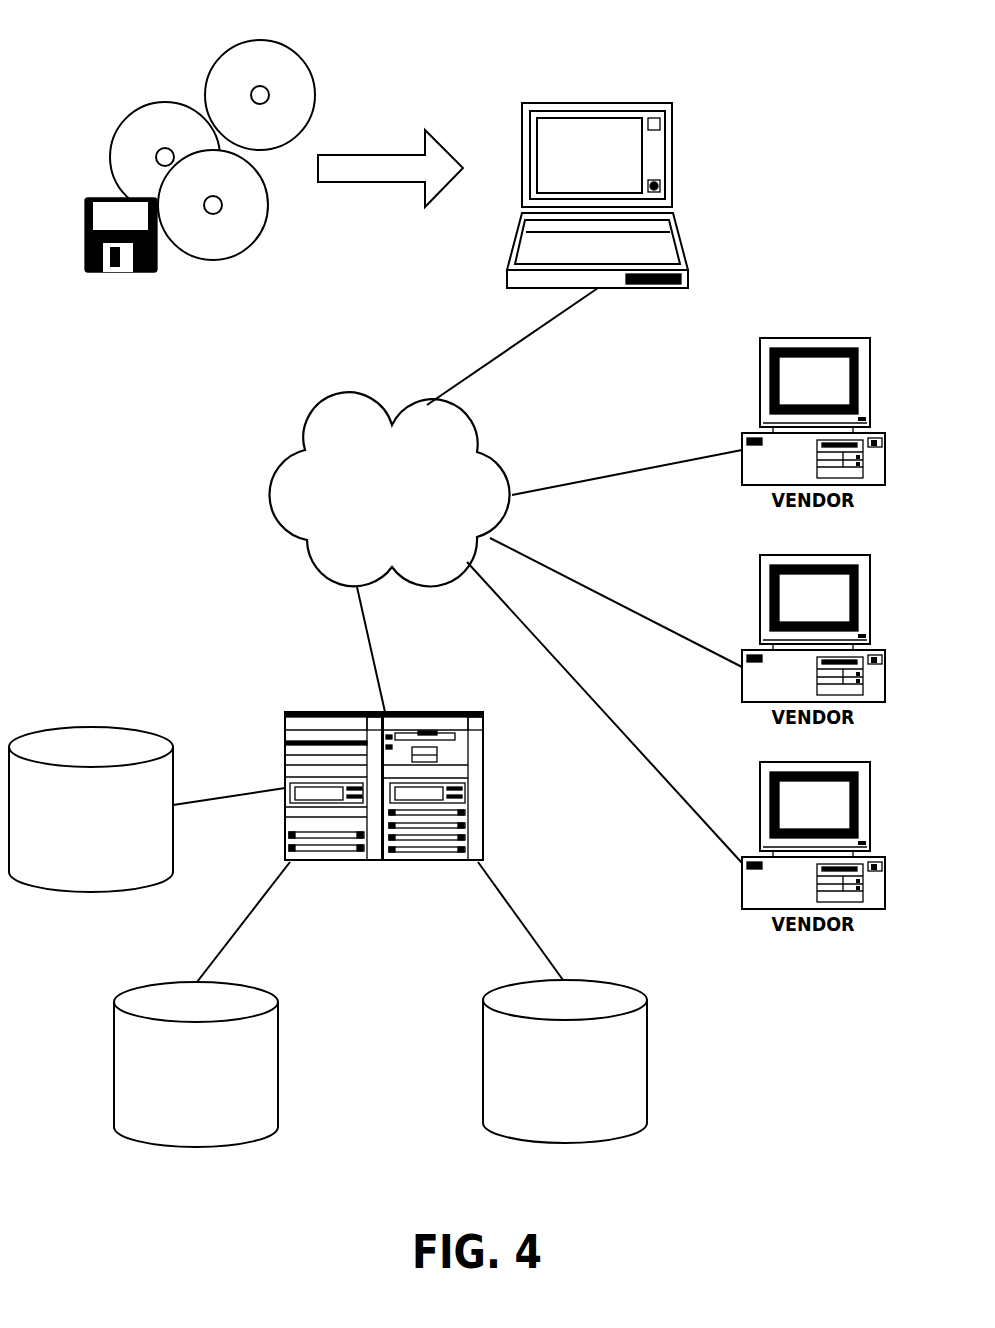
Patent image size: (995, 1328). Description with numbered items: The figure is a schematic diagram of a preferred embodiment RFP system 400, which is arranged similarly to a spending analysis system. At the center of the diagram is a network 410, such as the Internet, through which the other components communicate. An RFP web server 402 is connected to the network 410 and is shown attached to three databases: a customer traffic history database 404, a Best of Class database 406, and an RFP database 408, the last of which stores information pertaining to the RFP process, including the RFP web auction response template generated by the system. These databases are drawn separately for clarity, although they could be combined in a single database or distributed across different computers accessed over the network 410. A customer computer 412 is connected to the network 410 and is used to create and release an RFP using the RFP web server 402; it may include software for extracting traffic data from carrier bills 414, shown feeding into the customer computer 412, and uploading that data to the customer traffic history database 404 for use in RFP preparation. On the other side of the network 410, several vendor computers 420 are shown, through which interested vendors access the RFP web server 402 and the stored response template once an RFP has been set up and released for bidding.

The RFP system 400 is at (828, 116).
The RFP web server 402 is at (440, 712).
The customer traffic history database 404 is at (263, 990).
The Best of Class (BOC) database 406 is at (597, 980).
The RFP database 408 is at (155, 732).
The network 410 is at (507, 468).
The customer computer 412 is at (673, 130).
The carrier bills 414 is at (130, 53).
The vendor computers 420 is at (819, 614).